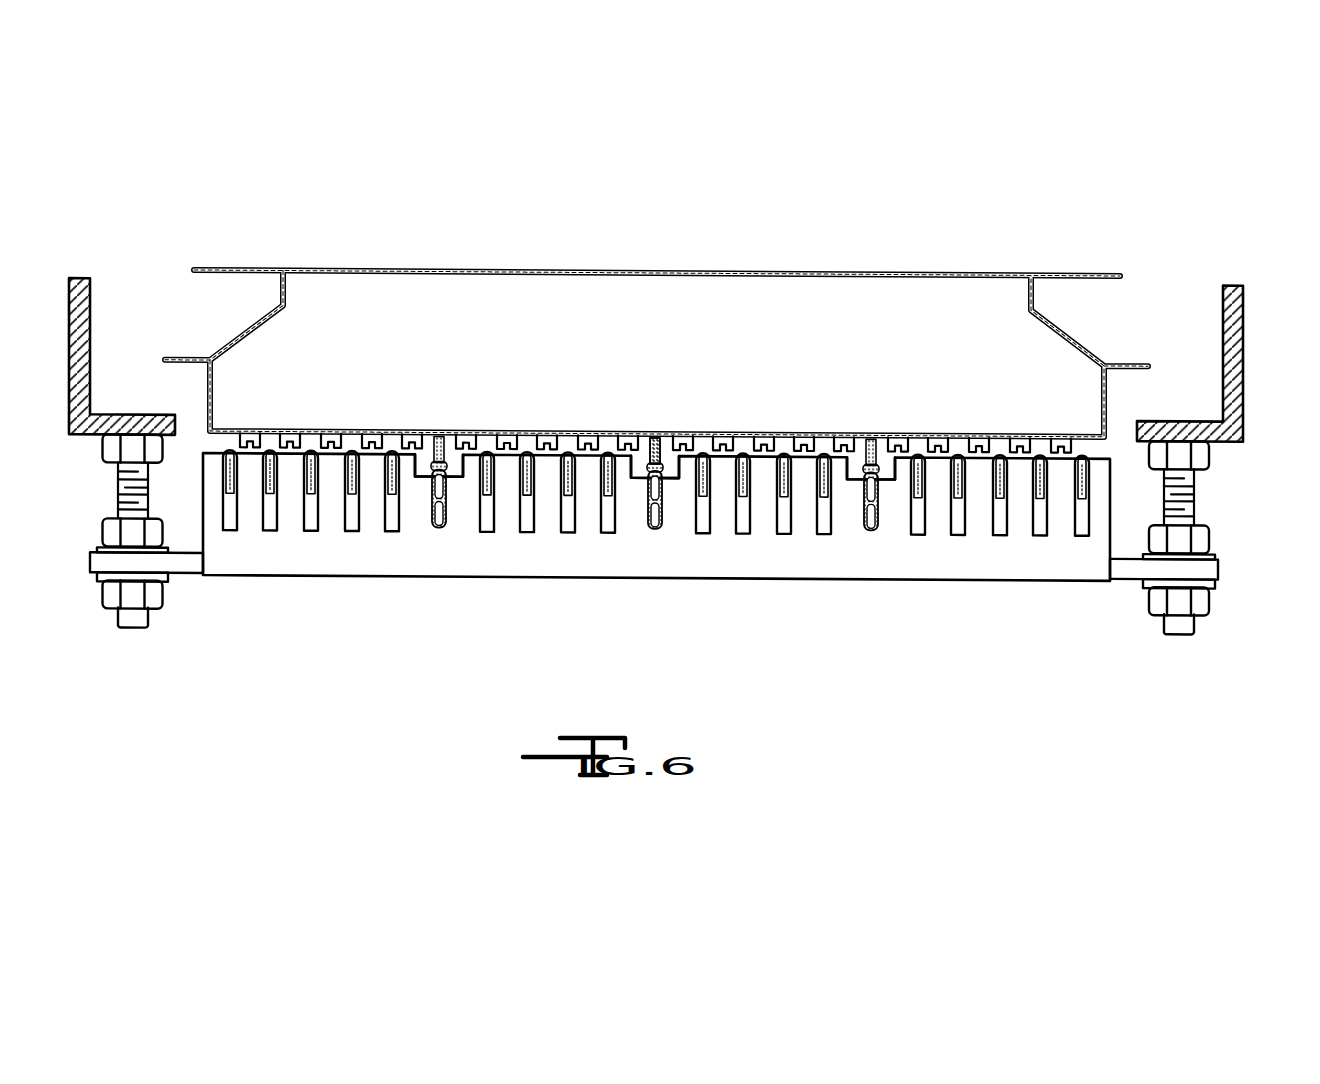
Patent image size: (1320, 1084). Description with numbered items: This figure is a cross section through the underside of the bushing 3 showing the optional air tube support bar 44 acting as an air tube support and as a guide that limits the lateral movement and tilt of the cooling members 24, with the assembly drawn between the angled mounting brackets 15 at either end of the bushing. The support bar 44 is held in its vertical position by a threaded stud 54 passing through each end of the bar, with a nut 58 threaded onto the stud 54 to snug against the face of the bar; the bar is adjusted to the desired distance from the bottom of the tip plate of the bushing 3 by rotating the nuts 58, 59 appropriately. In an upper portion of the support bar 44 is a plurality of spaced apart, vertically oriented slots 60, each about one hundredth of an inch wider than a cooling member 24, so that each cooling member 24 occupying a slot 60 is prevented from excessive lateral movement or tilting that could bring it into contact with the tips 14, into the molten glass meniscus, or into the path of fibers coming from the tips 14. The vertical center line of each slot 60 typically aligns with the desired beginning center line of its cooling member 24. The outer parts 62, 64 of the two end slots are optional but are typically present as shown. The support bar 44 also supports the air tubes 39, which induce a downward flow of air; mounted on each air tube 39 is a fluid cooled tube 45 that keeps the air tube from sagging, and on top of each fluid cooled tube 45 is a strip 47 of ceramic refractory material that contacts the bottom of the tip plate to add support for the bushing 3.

The bushing 3 is at (633, 341).
The tips 14 is at (333, 441).
The mounting bracket 15 is at (1240, 346).
The cooling member 24 is at (831, 455).
The air tube 39 is at (447, 527).
The air tube support bar 44 is at (1204, 572).
The fluid cooled tube 45 is at (640, 488).
The refractory strip 47 is at (660, 442).
The threaded stud 54 is at (120, 617).
The nut 58 is at (108, 596).
The nut 59 is at (108, 527).
The slot 60 is at (353, 522).
The outer part of end slot 62 is at (210, 482).
The outer part of end slot 64 is at (1100, 498).